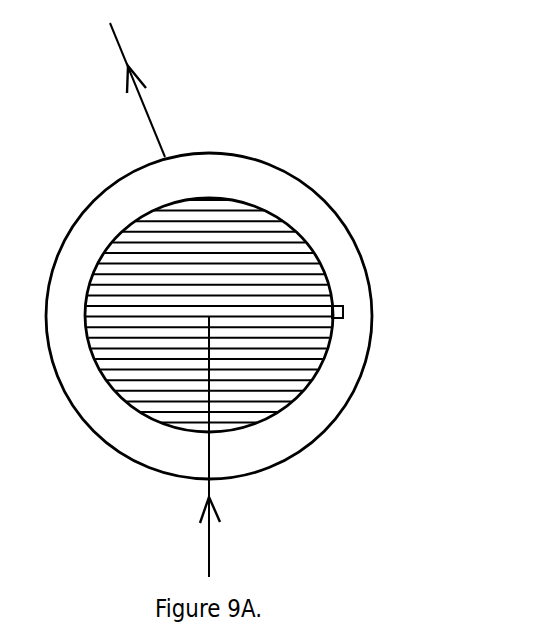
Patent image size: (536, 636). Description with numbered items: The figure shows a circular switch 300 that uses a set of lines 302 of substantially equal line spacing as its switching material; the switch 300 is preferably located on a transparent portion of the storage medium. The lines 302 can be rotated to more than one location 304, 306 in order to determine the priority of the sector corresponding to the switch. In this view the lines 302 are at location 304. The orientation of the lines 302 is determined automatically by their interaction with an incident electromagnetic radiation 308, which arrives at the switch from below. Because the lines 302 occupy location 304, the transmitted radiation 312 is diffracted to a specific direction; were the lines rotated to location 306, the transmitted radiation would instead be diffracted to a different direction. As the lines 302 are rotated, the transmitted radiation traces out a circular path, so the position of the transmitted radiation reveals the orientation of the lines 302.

The circular switch 300 is at (332, 200).
The set of lines 302 is at (322, 262).
The location 304 is at (359, 310).
The location 306 is at (213, 167).
The incident electromagnetic radiation 308 is at (228, 446).
The transmitted radiation 312 is at (137, 88).